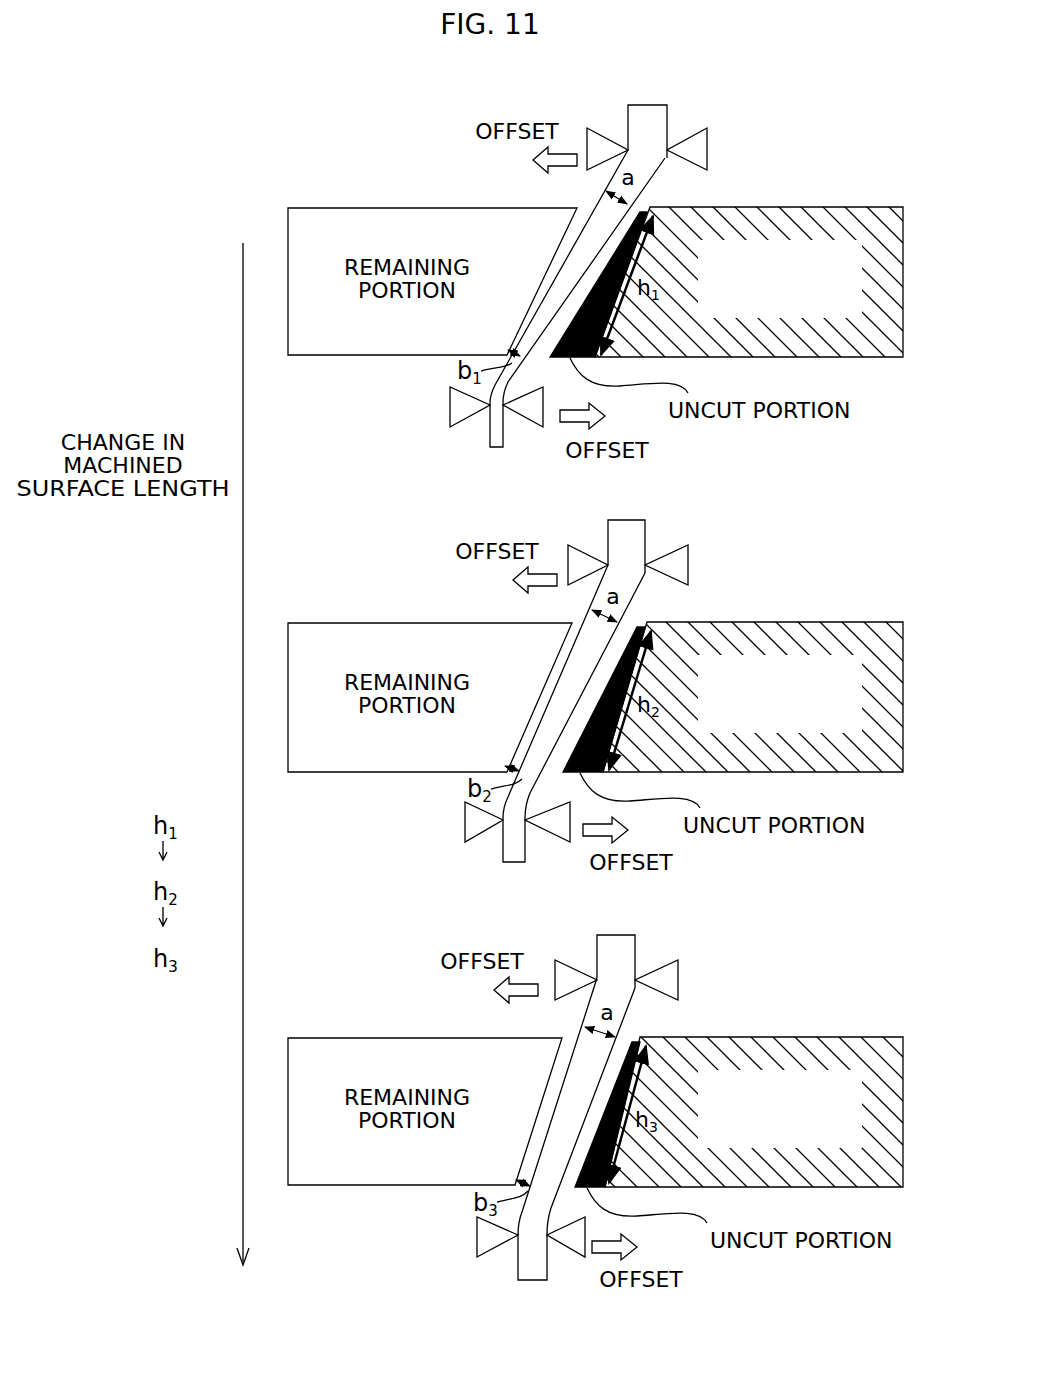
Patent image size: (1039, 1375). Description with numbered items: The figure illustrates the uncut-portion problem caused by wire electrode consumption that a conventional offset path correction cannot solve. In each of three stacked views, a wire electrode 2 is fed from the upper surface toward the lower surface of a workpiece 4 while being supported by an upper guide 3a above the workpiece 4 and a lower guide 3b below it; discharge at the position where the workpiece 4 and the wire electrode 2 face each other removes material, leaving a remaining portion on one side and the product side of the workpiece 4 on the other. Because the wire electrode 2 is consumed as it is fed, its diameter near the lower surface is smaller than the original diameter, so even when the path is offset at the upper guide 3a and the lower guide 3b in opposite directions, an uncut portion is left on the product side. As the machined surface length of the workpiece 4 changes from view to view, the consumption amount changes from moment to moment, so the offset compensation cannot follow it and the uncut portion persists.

The wire electrode 2 is at (645, 135).
The upper guide 3a is at (707, 150).
The lower guide 3b is at (448, 403).
The workpiece 4 is at (811, 207).